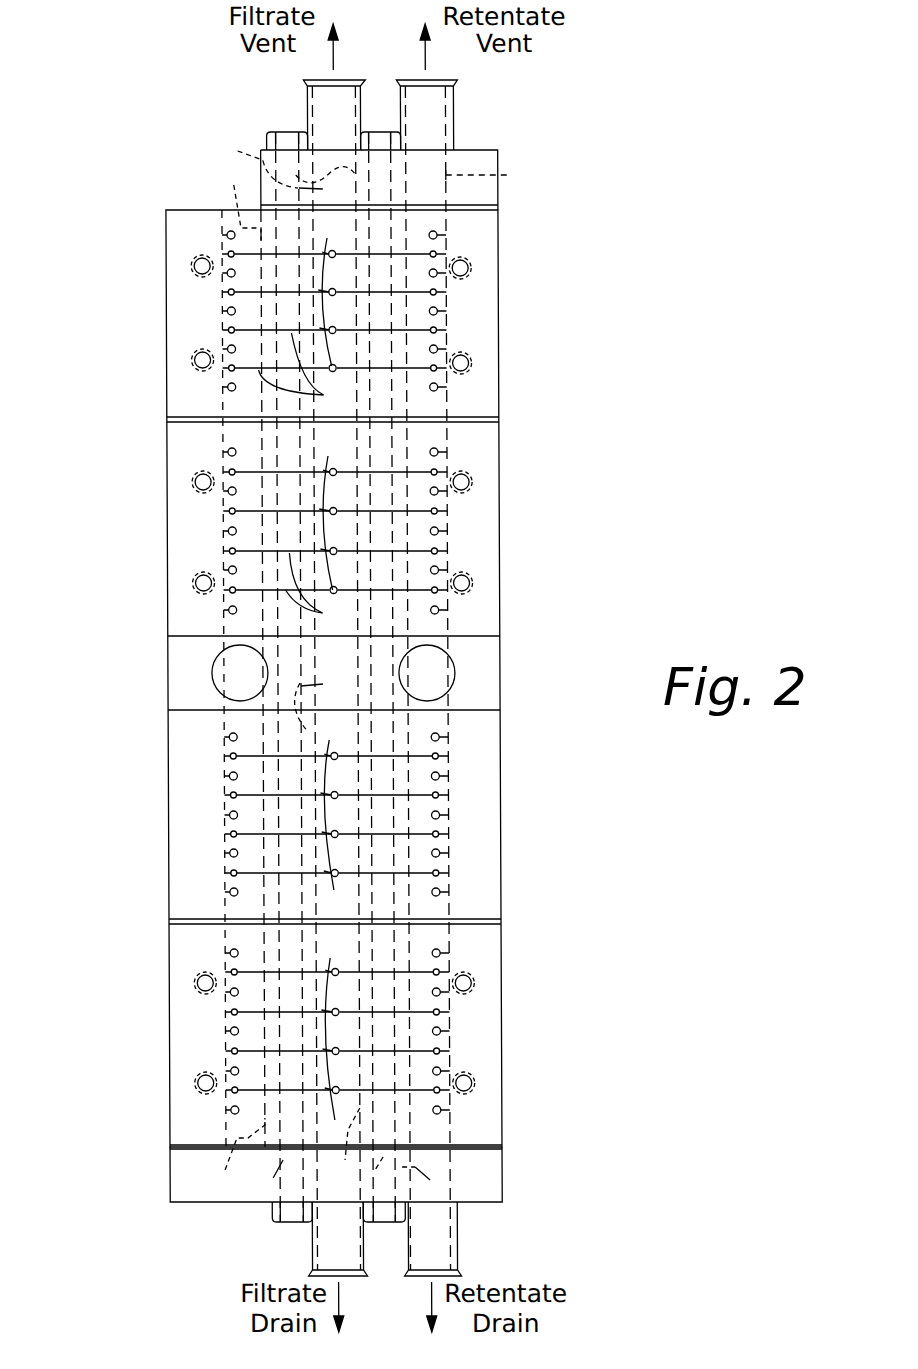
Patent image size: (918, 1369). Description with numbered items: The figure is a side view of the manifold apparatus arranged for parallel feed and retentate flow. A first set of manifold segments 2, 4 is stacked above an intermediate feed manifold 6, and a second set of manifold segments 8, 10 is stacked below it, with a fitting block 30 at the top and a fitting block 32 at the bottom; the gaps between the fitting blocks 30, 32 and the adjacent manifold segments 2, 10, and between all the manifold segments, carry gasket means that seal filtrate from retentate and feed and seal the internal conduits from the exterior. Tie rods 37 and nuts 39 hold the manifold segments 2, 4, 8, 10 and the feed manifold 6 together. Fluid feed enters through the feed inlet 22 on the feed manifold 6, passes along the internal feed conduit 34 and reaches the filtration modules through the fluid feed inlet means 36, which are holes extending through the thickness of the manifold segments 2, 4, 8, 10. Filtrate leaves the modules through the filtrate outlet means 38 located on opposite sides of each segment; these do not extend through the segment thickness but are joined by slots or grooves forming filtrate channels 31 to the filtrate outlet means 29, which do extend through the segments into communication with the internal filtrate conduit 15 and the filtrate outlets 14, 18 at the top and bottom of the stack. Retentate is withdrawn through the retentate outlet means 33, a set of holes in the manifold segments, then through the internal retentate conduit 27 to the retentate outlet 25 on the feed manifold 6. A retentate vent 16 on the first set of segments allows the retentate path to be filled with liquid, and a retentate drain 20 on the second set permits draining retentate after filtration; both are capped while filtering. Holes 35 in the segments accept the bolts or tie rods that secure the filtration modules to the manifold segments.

The manifold segment 2 is at (156, 277).
The manifold segment 4 is at (508, 455).
The feed manifold 6 is at (156, 692).
The manifold segment 8 is at (508, 858).
The manifold segment 10 is at (508, 1105).
The filtrate outlet 14 is at (307, 108).
The internal filtrate conduit 15 is at (283, 662).
The retentate vent 16 is at (453, 113).
The filtrate outlet 18 is at (360, 1262).
The retentate drain 20 is at (452, 1242).
The feed inlet 22 is at (209, 671).
The retentate outlet 25 is at (452, 679).
The internal retentate conduit 27 is at (495, 172).
The filtrate outlet means 29 is at (334, 663).
The fitting block 30 is at (490, 150).
The filtrate channels 31 is at (308, 479).
The fitting block 32 is at (168, 1163).
The retentate outlet means 33 is at (437, 236).
The internal feed conduit 34 is at (227, 678).
The holes 35 is at (191, 262).
The fluid feed inlet means 36 is at (228, 232).
The tie rods 37 is at (346, 683).
The filtrate outlet means 38 is at (225, 252).
The nuts 39 is at (277, 132).